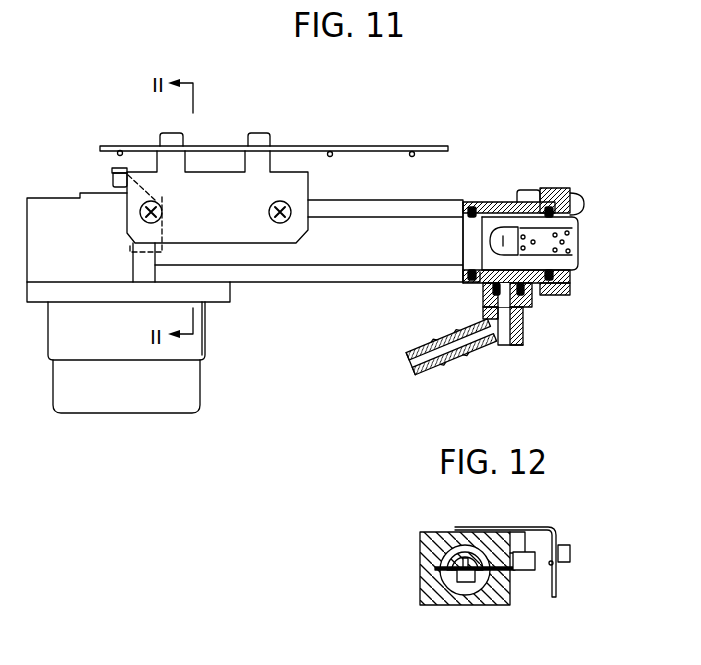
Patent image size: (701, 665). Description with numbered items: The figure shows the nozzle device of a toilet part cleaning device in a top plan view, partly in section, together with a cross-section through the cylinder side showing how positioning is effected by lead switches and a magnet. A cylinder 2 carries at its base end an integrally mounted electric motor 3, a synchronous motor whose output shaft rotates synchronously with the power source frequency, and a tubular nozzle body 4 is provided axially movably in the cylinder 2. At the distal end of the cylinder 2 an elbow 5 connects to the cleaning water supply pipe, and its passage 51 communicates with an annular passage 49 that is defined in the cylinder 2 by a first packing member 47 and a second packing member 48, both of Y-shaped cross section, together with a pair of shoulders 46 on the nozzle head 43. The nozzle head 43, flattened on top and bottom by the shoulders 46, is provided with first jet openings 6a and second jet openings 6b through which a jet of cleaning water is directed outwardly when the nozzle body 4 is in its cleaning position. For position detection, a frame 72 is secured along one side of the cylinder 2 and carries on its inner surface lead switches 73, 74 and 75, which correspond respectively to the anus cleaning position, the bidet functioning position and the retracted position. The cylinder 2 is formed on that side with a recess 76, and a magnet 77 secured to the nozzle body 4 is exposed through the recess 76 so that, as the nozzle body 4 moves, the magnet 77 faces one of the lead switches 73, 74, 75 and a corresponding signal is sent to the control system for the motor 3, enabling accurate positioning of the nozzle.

In FIG. 11, the cylinder 2 is at (290, 258).
In FIG. 12, the cylinder 2 is at (420, 553).
In FIG. 11, the electric motor 3 is at (128, 405).
In FIG. 11, the nozzle body 4 is at (473, 230).
In FIG. 12, the nozzle body 4 is at (452, 545).
In FIG. 11, the elbow 5 is at (509, 345).
In FIG. 11, the first jet openings 6a is at (533, 242).
In FIG. 11, the second jet openings 6b is at (565, 243).
In FIG. 11, the nozzle head 43 is at (525, 261).
In FIG. 11, the shoulders 46 is at (504, 240).
In FIG. 11, the first packing member 47 is at (470, 283).
In FIG. 11, the second packing member 48 is at (555, 296).
In FIG. 11, the annular passage 49 is at (528, 292).
In FIG. 11, the passage 51 is at (506, 312).
In FIG. 11, the frame 72 is at (287, 148).
In FIG. 12, the frame 72 is at (556, 570).
In FIG. 11, the lead switch 73 is at (330, 151).
In FIG. 11, the lead switch 74 is at (412, 151).
In FIG. 11, the lead switch 75 is at (119, 150).
In FIG. 12, the lead switch 75 is at (558, 556).
In FIG. 11, the recess 76 is at (217, 216).
In FIG. 12, the recess 76 is at (497, 607).
In FIG. 11, the magnet 77 is at (112, 171).
In FIG. 12, the magnet 77 is at (530, 557).